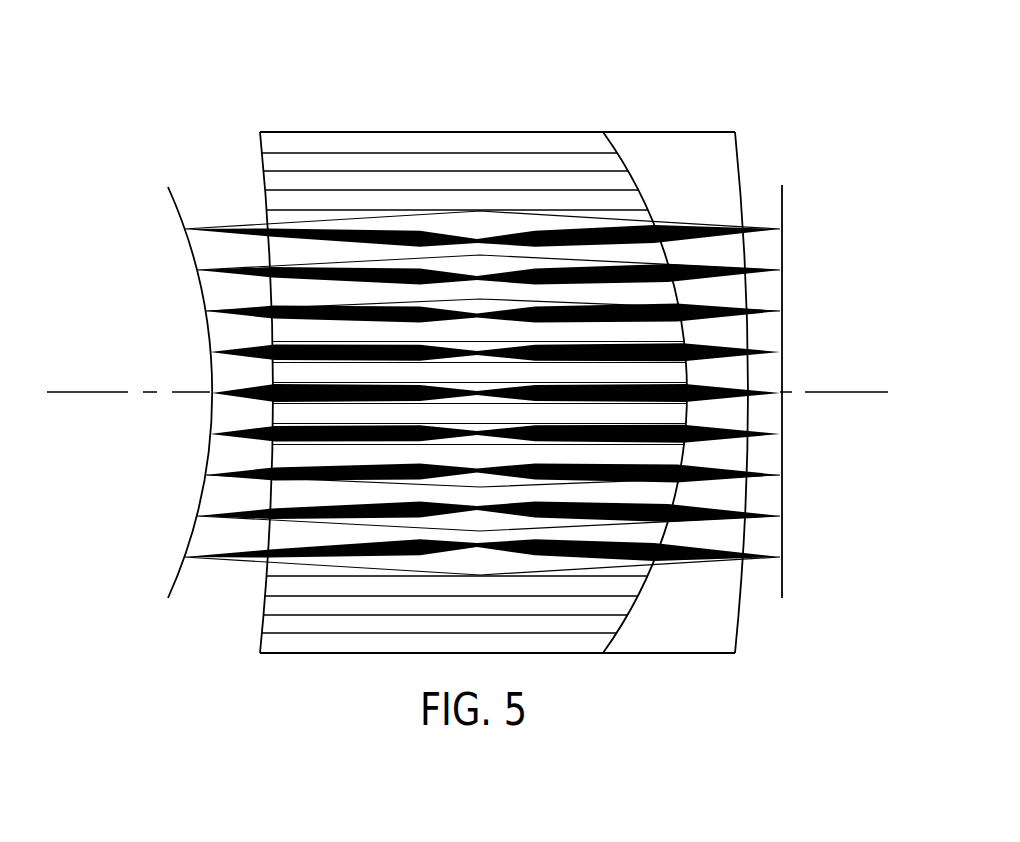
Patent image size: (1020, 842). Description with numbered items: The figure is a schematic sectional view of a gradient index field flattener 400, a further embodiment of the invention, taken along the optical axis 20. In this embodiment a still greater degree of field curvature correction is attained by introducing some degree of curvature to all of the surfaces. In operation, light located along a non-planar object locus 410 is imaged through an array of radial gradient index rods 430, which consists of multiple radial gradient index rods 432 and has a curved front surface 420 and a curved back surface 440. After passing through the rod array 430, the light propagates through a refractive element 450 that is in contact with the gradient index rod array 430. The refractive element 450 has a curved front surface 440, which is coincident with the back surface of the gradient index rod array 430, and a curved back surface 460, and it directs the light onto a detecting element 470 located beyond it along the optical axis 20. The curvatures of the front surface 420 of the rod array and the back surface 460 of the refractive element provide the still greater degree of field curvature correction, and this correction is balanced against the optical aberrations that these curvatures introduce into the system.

The gradient index field flattener 400 is at (136, 66).
The optical axis 20 is at (65, 392).
The non-planar object locus 410 is at (177, 210).
The curved front surface 420 is at (262, 180).
The array of radial gradient index rods 430 is at (395, 131).
The radial gradient index rod 432 is at (525, 142).
The curved back surface 440 is at (622, 133).
The refractive element 450 is at (688, 142).
The curved back surface 460 is at (738, 153).
The detecting element 470 is at (782, 202).